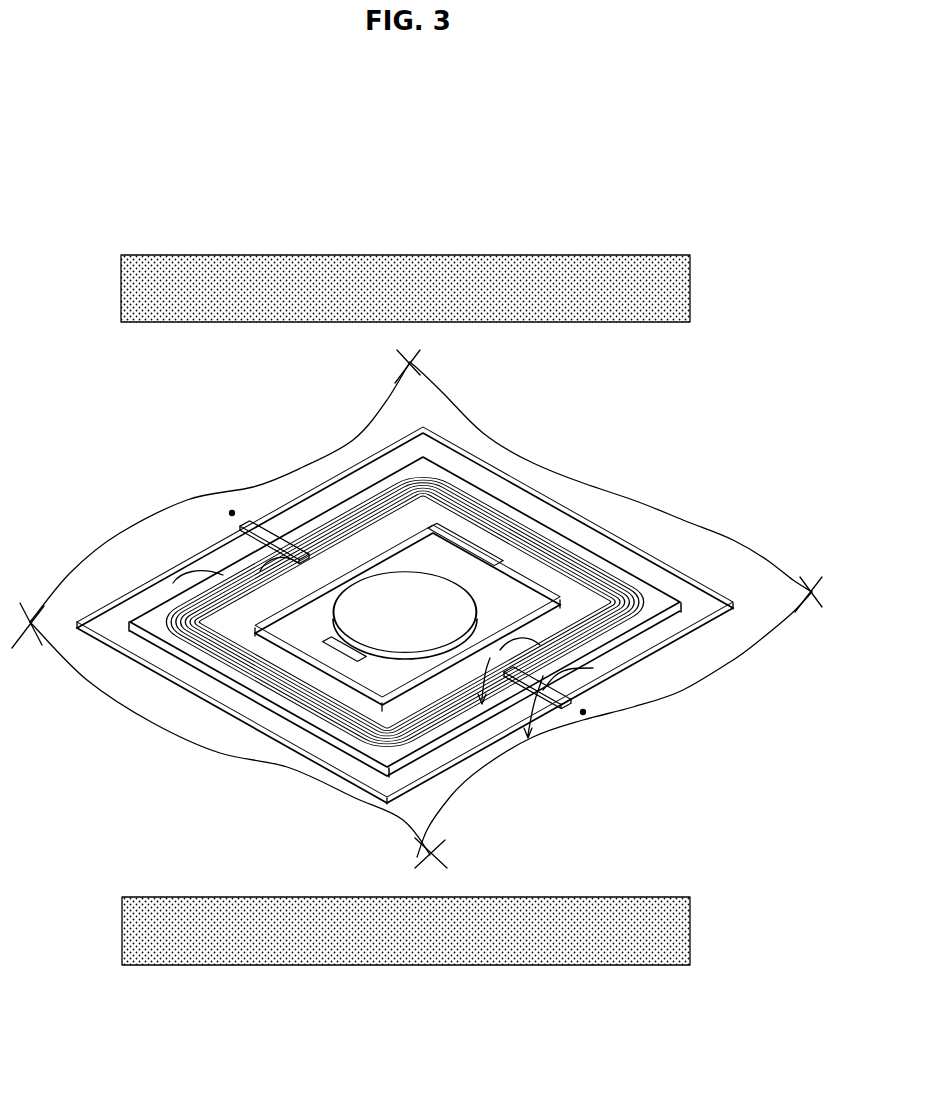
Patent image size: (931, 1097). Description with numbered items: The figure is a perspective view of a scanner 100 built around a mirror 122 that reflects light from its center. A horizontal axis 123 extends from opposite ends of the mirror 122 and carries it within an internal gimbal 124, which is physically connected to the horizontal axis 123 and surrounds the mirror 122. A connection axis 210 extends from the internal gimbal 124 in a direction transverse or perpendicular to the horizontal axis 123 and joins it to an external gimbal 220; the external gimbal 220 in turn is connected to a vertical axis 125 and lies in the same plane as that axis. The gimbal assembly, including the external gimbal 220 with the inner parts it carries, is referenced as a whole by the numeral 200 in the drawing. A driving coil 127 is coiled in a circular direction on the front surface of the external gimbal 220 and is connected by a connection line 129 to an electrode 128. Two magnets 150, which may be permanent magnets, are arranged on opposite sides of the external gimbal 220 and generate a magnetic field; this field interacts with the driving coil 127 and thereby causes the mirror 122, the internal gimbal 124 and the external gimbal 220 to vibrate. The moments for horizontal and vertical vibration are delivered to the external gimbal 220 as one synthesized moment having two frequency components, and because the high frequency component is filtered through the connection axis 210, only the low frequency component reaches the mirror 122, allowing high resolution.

The scanner 100 is at (128, 162).
The magnet 150 is at (690, 287).
The substrate stack 200 is at (167, 810).
The external gimbal 220 is at (238, 527).
The connection axis 210 is at (355, 383).
The driving coil 127 is at (472, 503).
The internal gimbal 124 is at (508, 558).
The mirror 122 is at (457, 617).
The horizontal axis 123 is at (460, 616).
The vertical axis 125 is at (278, 532).
The electrode 128 is at (232, 512).
The connection line 129 is at (277, 532).